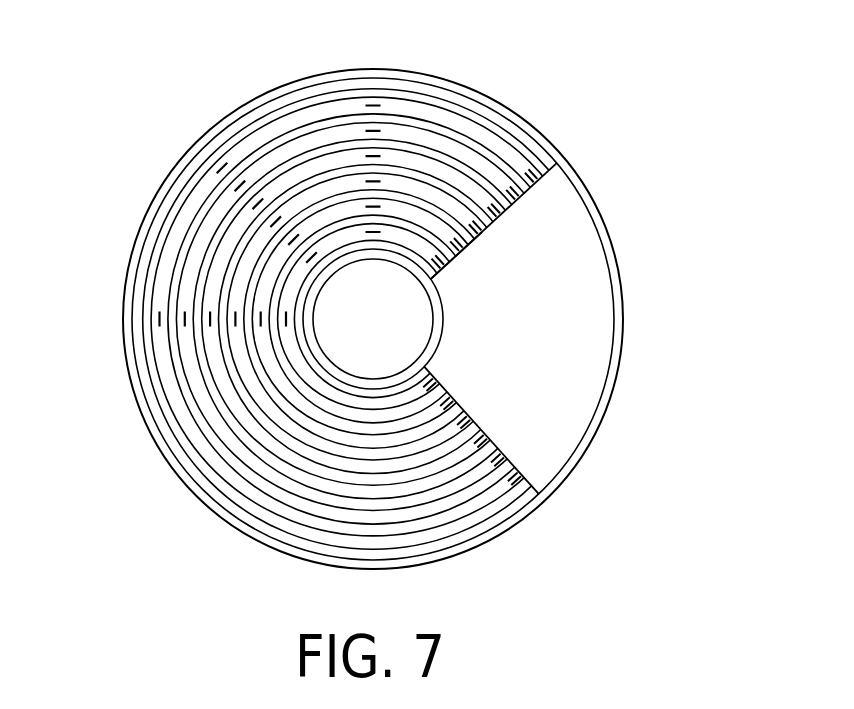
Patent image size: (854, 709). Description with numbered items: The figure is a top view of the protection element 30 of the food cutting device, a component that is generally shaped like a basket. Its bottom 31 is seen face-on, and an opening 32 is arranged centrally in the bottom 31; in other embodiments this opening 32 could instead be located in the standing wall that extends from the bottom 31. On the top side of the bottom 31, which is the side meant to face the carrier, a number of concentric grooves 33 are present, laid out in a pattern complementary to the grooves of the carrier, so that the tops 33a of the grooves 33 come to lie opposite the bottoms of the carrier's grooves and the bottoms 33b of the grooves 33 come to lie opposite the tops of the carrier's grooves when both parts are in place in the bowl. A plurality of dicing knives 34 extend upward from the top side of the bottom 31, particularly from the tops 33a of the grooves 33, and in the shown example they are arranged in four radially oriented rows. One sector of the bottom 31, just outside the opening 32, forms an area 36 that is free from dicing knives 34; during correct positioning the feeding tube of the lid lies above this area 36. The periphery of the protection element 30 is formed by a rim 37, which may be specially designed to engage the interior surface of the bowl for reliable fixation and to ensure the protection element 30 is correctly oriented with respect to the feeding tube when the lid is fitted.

The protection element 30 is at (167, 375).
The bottom 31 is at (240, 153).
The opening 32 is at (562, 228).
The concentric grooves 33 is at (532, 160).
The tops of the grooves 33a is at (482, 237).
The bottoms of the grooves 33b is at (456, 263).
The dicing knives 34 is at (185, 328).
The area 36 is at (252, 443).
The rim 37 is at (148, 211).